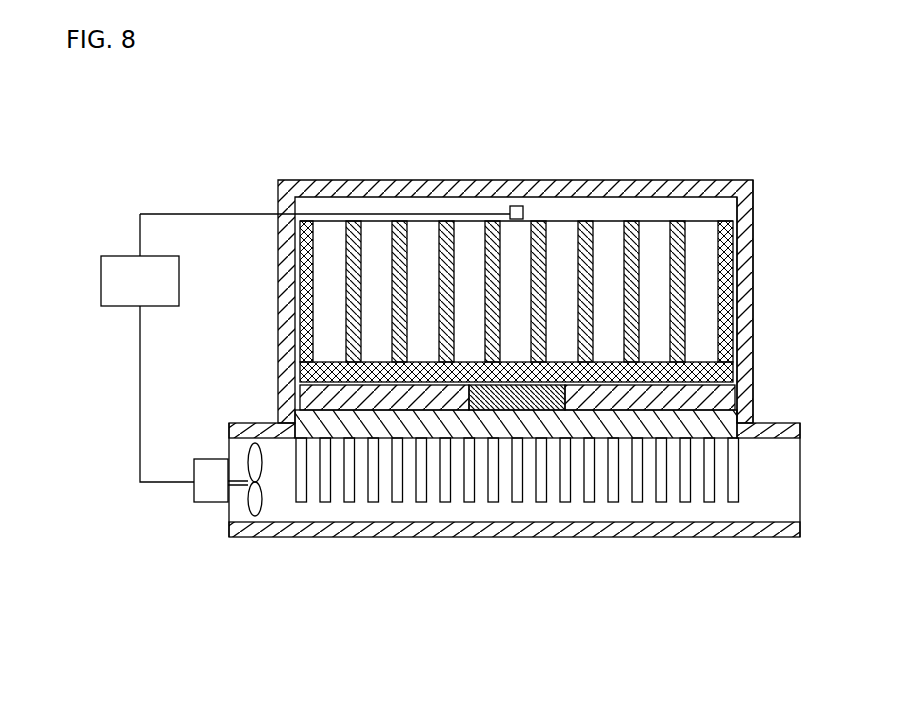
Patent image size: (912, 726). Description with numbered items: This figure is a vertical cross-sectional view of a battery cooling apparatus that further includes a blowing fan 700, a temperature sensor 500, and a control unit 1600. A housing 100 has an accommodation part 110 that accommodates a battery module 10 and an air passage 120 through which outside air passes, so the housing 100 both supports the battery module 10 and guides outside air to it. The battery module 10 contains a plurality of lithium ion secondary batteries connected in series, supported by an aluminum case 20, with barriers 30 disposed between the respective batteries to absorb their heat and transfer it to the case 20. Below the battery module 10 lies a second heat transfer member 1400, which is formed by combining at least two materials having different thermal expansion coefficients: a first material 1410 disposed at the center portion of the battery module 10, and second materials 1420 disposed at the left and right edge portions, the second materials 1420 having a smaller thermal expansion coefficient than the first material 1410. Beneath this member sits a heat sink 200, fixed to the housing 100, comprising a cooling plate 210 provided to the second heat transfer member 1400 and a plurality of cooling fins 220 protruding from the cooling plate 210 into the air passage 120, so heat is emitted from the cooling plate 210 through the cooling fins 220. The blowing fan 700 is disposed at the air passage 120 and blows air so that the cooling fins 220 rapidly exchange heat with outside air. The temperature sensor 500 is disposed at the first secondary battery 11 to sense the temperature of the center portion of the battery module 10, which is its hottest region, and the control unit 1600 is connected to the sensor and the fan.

The housing 100 is at (714, 179).
The accommodation part 110 is at (748, 283).
The air passage 120 is at (787, 478).
The battery module 10 is at (661, 210).
The first secondary battery 11 is at (530, 256).
The barriers 30 is at (397, 323).
The case 20 is at (300, 378).
The temperature sensor 500 is at (517, 205).
The control unit 1600 is at (101, 282).
The second heat transfer member 1400 is at (463, 535).
The second materials 1420 is at (455, 395).
The first material 1410 is at (530, 395).
The heat sink 200 is at (517, 547).
The cooling plate 210 is at (367, 422).
The cooling fins 220 is at (437, 500).
The blowing fan 700 is at (240, 514).